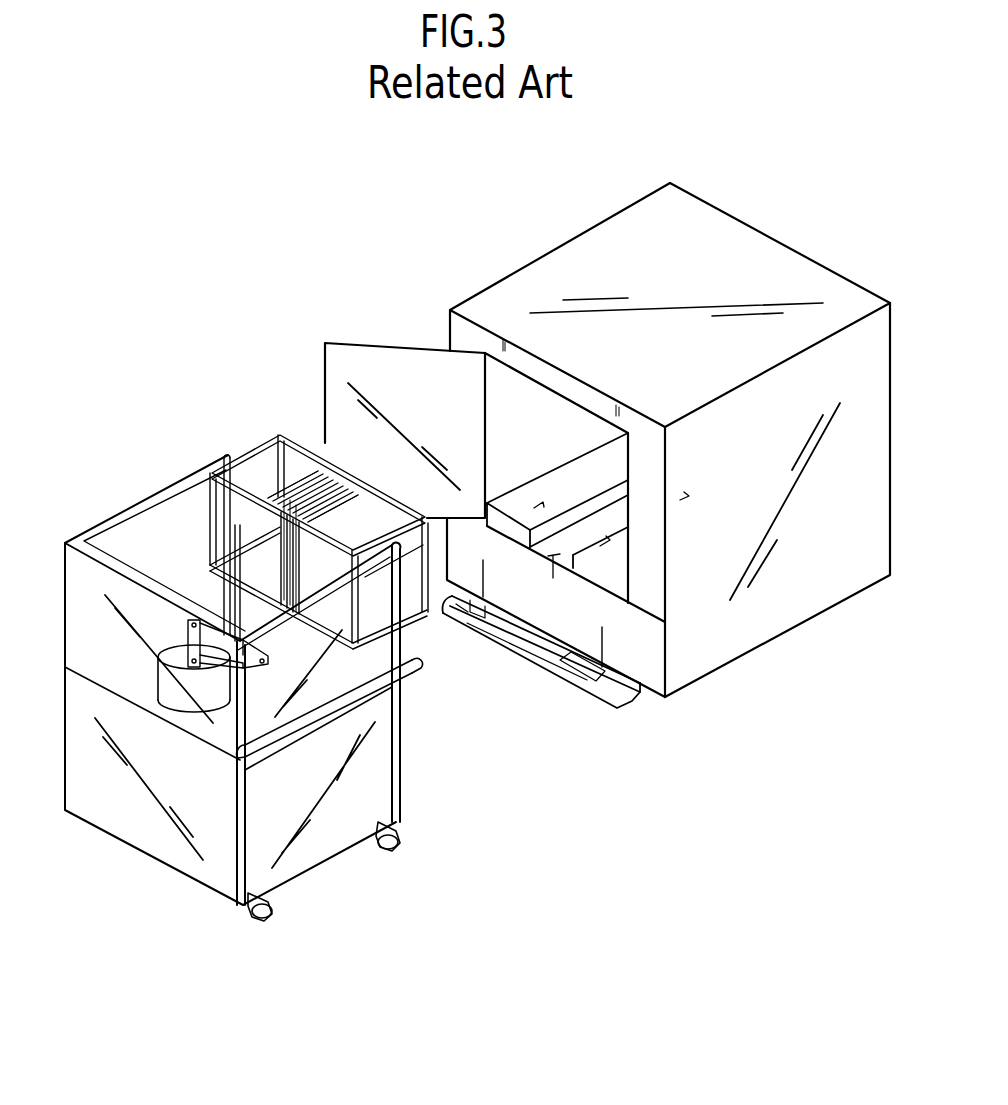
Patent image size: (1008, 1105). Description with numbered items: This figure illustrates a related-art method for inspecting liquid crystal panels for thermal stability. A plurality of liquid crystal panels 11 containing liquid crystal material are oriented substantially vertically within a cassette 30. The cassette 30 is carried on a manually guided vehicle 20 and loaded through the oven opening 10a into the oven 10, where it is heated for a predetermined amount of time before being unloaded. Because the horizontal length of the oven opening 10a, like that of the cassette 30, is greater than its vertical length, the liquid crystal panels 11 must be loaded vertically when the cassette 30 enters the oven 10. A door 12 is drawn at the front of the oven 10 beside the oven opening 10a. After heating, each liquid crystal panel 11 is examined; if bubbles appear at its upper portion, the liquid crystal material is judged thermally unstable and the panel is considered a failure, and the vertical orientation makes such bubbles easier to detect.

The oven 10 is at (740, 233).
The oven opening 10a is at (523, 388).
The liquid crystal panels 11 is at (309, 462).
The door 12 is at (347, 397).
The manually guided vehicle 20 is at (142, 490).
The cassette 30 is at (260, 442).